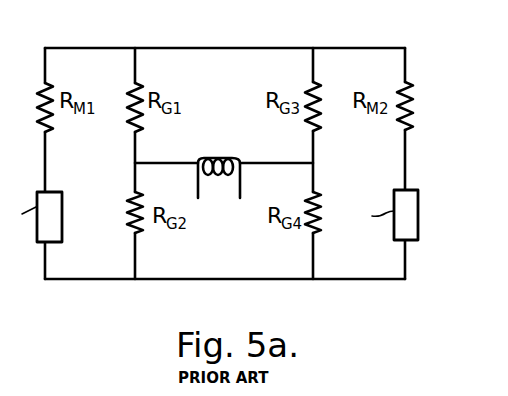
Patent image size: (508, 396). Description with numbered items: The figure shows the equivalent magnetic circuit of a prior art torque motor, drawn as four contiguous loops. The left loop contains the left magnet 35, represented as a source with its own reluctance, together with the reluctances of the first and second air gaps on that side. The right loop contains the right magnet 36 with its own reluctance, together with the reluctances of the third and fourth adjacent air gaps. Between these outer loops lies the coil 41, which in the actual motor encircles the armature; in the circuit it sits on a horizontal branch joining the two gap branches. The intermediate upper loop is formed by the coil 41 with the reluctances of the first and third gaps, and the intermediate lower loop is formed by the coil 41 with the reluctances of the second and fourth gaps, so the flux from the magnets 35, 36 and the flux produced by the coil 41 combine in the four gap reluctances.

The left permanent magnet 35 is at (63, 214).
The right permanent magnet 36 is at (394, 229).
The coil 41 is at (228, 158).